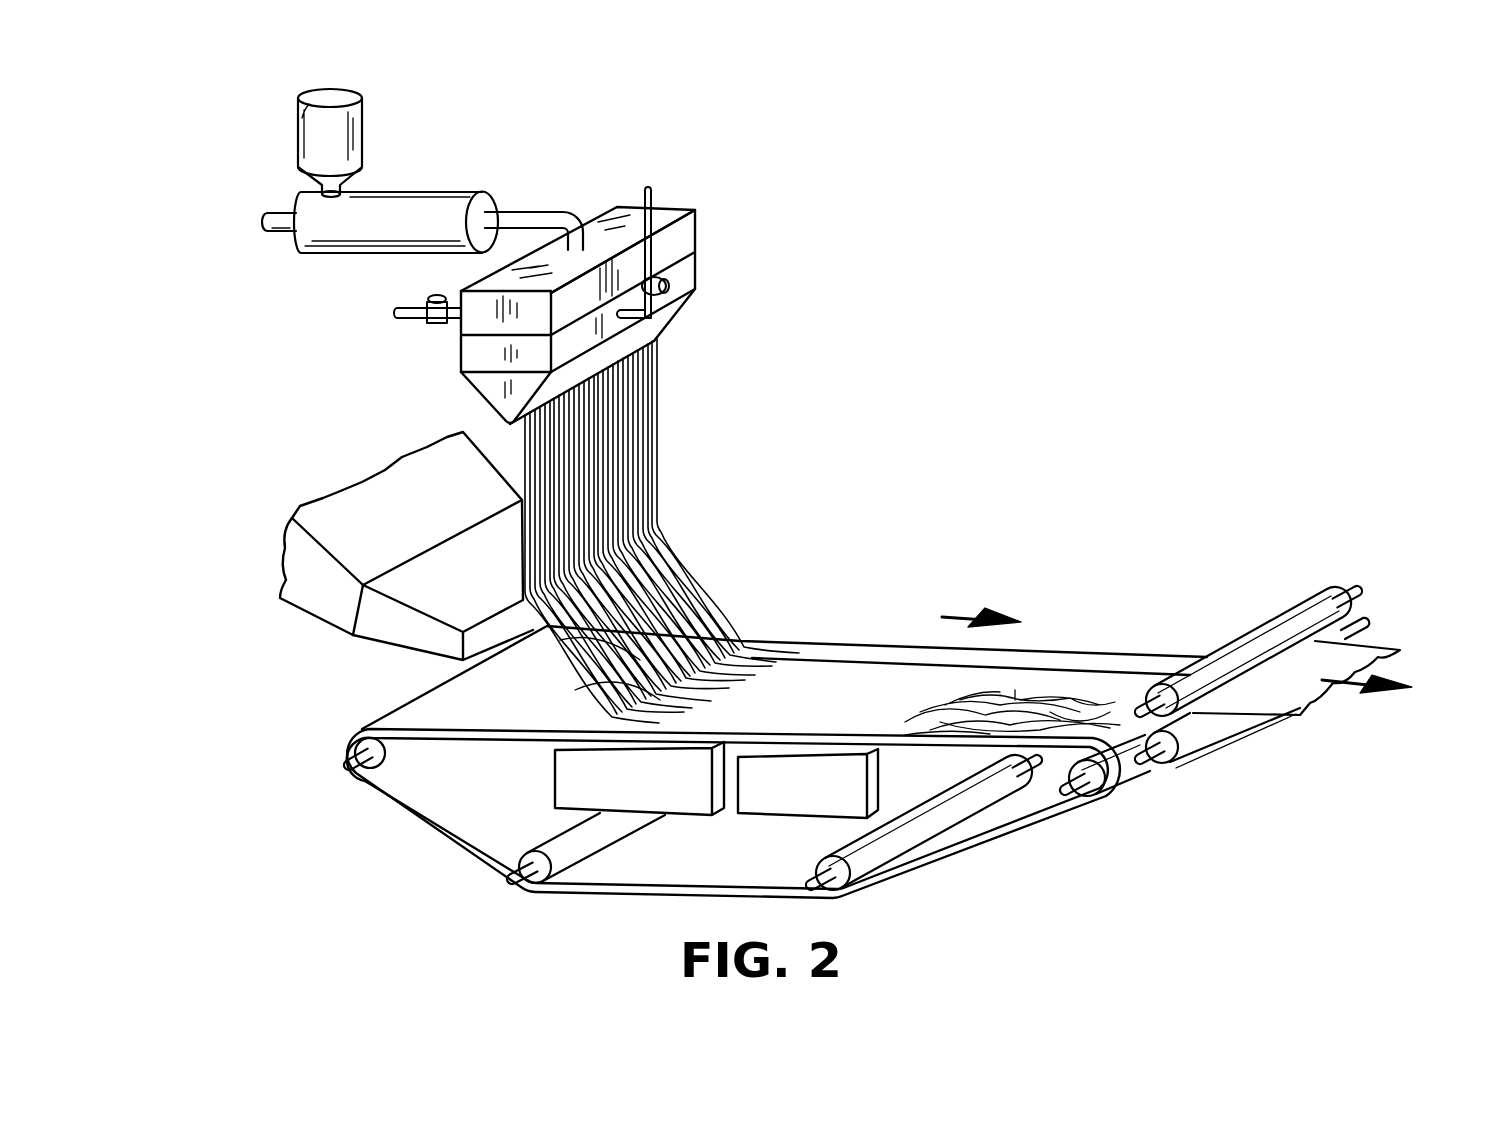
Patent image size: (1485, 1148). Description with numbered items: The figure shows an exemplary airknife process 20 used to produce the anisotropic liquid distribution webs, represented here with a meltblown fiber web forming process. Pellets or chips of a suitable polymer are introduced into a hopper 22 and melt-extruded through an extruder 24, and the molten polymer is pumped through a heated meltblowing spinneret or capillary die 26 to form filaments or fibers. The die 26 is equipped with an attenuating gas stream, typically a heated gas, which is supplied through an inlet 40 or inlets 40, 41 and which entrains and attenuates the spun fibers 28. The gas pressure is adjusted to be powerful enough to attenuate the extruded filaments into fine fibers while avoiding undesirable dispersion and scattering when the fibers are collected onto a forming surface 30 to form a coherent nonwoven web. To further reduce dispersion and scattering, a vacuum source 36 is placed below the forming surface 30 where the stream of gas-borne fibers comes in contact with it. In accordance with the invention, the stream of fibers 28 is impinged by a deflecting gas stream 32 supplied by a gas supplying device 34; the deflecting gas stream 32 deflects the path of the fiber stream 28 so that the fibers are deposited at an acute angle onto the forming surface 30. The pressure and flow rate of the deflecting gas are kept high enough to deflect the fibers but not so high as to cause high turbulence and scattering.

The airknife process 20 is at (827, 146).
The hopper 22 is at (310, 138).
The extruder 24 is at (425, 196).
The meltblowing spinneret or capillary die 26 is at (698, 239).
The spun fibers 28 is at (679, 373).
The forming surface 30 is at (412, 698).
The deflecting gas stream 32 is at (527, 578).
The gas supplying device 34 is at (470, 608).
The vacuum source 36 is at (645, 796).
The inlet 40 is at (653, 190).
The inlet 41 is at (398, 302).